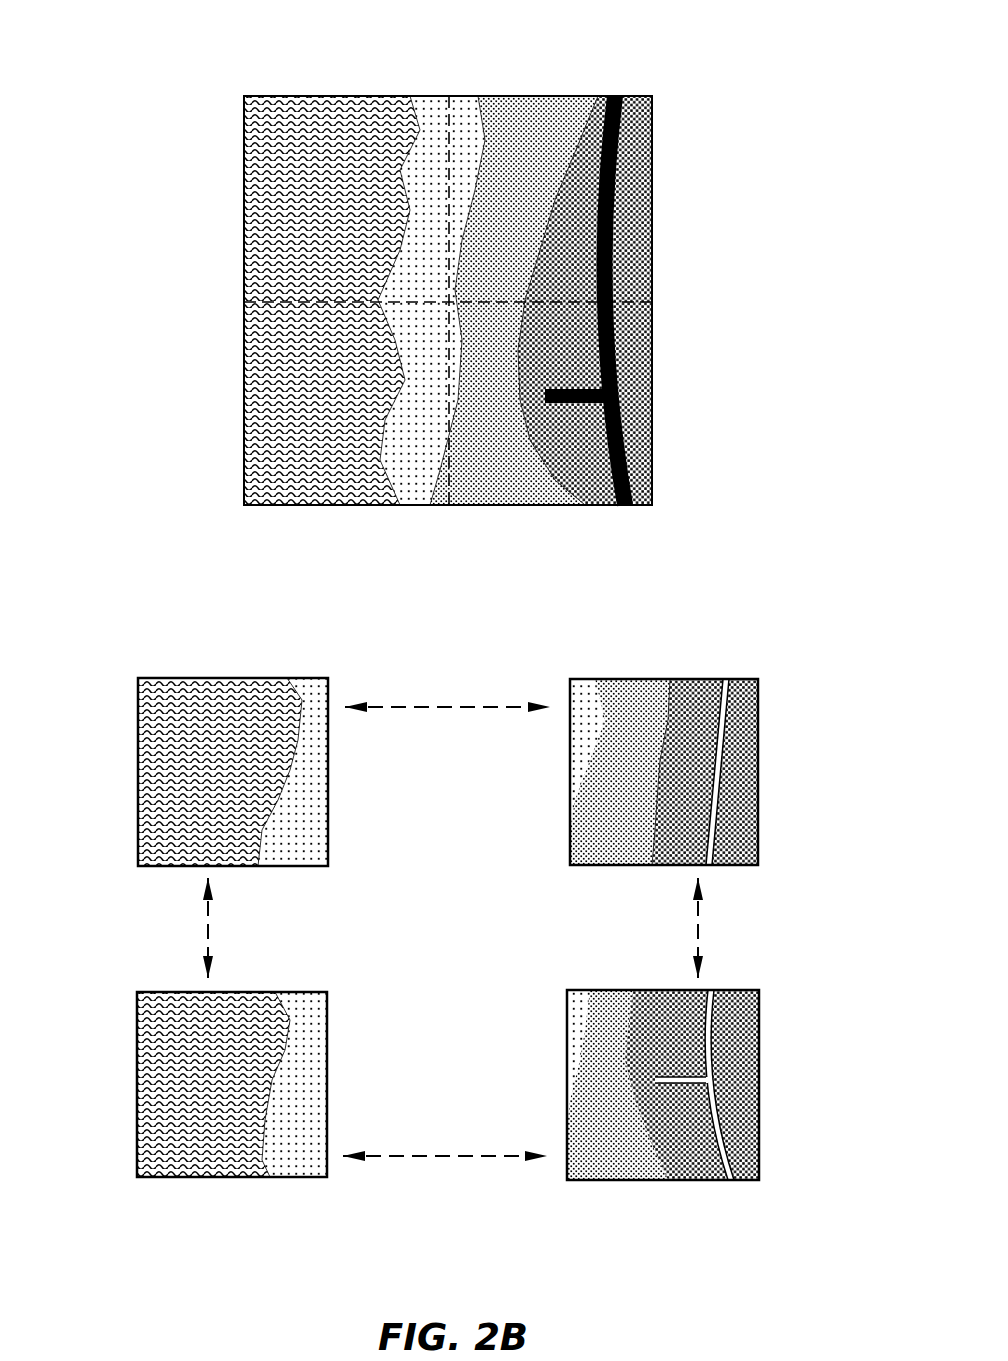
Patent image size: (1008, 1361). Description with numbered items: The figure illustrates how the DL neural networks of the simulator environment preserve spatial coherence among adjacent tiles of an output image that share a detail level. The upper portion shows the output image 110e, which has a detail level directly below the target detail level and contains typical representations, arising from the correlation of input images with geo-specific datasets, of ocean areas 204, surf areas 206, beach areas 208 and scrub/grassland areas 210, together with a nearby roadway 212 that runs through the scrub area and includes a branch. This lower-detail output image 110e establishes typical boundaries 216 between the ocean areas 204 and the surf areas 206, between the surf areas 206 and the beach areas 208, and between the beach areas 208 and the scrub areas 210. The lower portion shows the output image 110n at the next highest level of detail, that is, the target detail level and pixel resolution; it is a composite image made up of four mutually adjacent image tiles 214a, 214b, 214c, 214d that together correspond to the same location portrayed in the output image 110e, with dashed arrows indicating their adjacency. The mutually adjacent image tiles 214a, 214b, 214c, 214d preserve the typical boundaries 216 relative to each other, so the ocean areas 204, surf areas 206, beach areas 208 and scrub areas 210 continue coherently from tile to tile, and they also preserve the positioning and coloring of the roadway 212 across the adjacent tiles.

The output image 110e is at (133, 62).
The output image 110n is at (120, 619).
The ocean areas 204 is at (296, 175).
The surf areas 206 is at (432, 125).
The beach areas 208 is at (512, 190).
The scrub/grassland areas 210 is at (588, 235).
The roadway 212 is at (650, 352).
The image tile 214a is at (173, 678).
The image tile 214b is at (705, 679).
The image tile 214c is at (230, 1178).
The image tile 214d is at (640, 1180).
The boundaries 216 is at (519, 342).